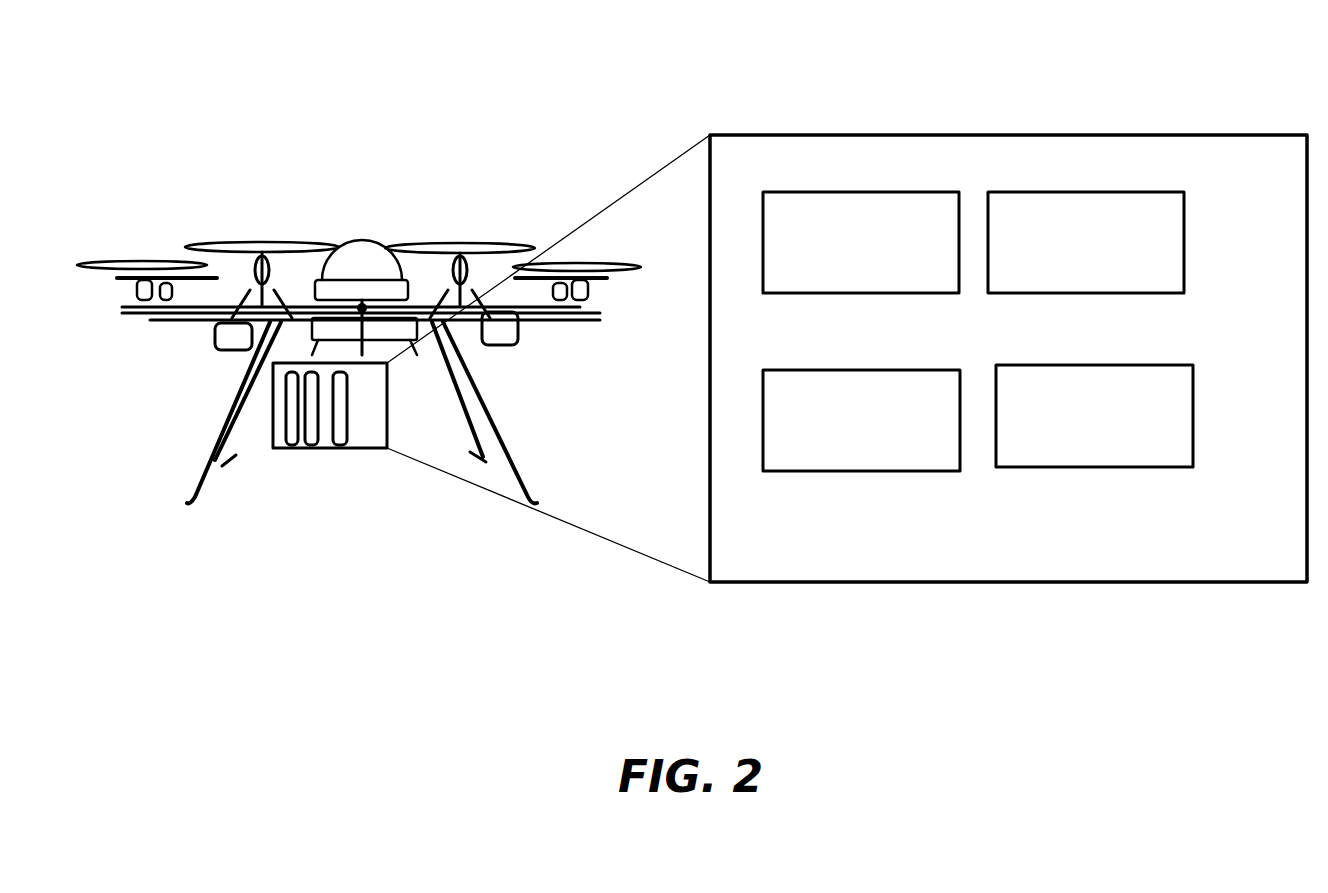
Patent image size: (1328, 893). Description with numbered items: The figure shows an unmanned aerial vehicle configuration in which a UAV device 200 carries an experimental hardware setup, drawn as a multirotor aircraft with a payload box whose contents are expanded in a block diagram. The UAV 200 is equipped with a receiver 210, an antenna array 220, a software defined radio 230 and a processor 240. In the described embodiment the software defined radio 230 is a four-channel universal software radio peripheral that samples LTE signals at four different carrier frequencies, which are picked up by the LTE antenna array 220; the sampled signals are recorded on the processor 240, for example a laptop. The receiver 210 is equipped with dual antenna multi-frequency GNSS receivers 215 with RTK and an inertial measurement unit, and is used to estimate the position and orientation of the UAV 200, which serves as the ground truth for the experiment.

The UAV device 200 is at (103, 86).
The dual antenna multi-frequency GNSS receivers 215 is at (503, 310).
The receiver 210 is at (861, 242).
The antenna array 220 is at (861, 420).
The software defined radio 230 is at (1086, 242).
The processor 240 is at (1094, 416).